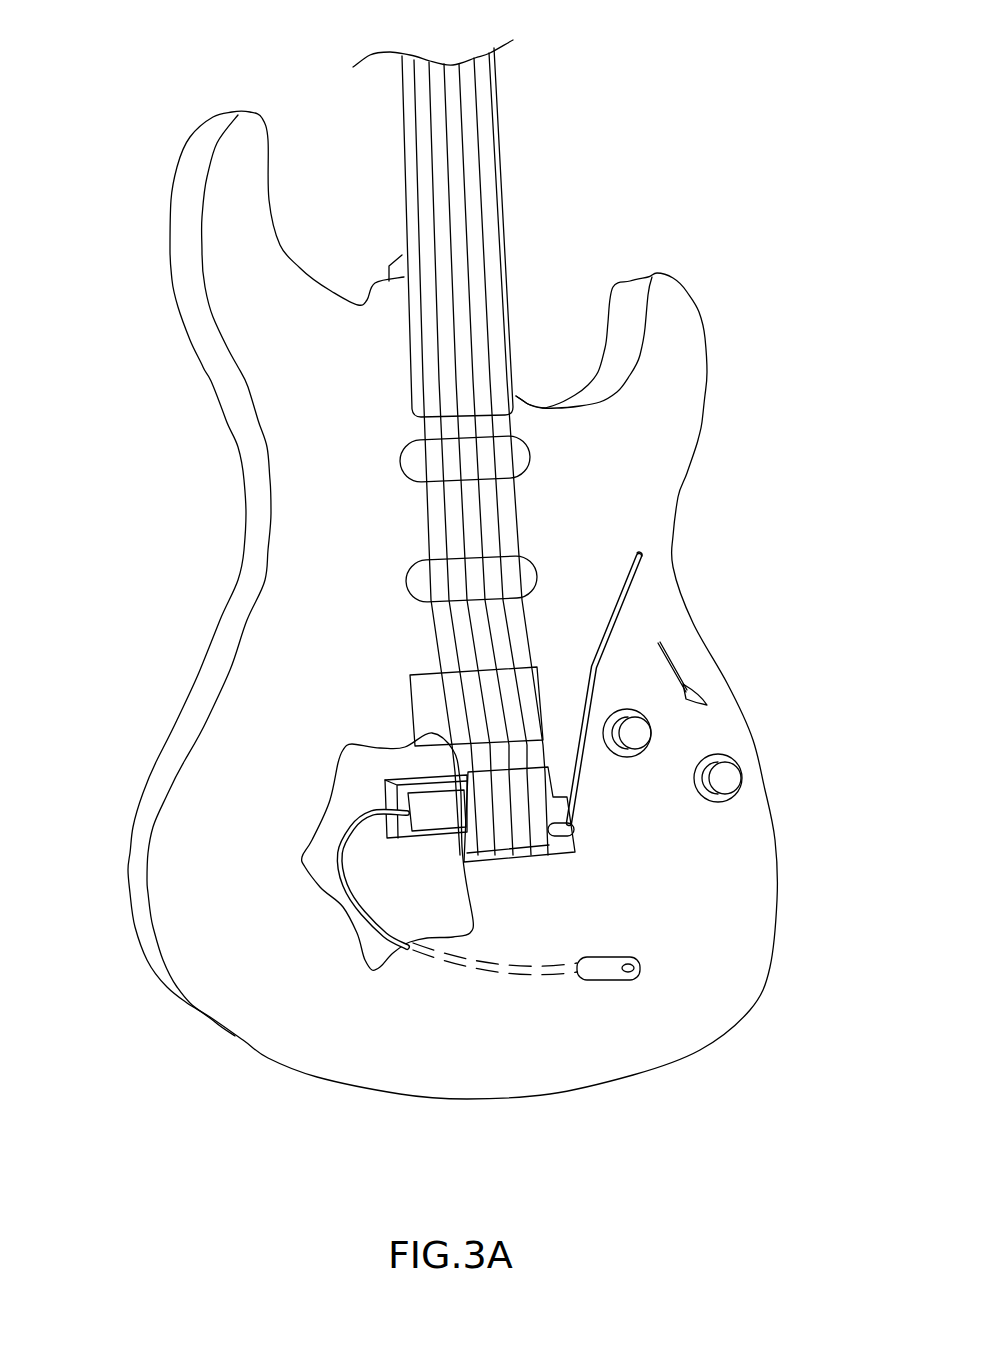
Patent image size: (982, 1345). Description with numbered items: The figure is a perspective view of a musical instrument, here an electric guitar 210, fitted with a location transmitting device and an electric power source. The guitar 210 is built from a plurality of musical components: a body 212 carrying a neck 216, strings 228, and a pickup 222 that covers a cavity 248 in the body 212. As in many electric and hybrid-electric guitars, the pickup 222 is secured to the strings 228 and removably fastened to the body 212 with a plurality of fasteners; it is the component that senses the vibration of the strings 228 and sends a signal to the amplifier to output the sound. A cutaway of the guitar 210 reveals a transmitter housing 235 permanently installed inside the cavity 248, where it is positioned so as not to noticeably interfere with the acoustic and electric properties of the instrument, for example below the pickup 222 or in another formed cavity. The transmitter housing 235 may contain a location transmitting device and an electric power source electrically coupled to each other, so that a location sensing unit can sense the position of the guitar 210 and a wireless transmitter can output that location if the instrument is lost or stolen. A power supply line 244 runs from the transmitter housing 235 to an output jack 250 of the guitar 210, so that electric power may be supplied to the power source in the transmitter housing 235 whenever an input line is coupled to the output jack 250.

The electric guitar 210 is at (721, 137).
The body 212 is at (645, 213).
The neck 216 is at (499, 125).
The strings 228 is at (473, 228).
The pickup 222 is at (525, 833).
The transmitter housing 235 is at (427, 805).
The power supply line 244 is at (340, 873).
The cavity 248 is at (393, 842).
The output jack 250 is at (640, 968).